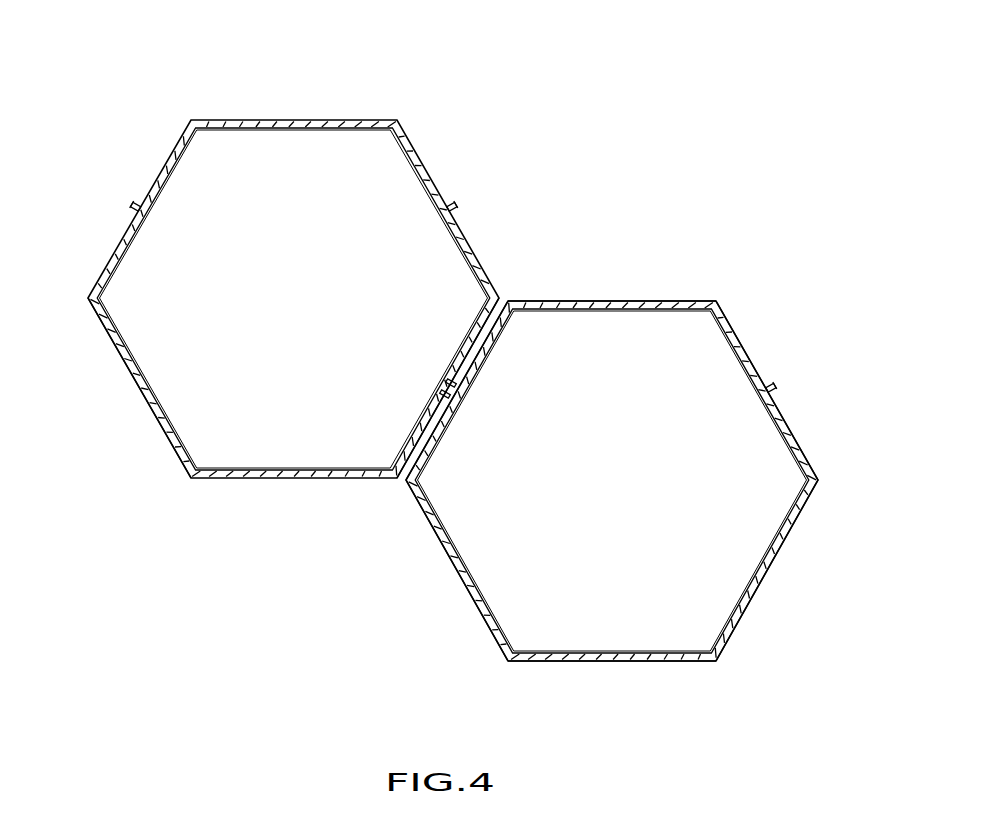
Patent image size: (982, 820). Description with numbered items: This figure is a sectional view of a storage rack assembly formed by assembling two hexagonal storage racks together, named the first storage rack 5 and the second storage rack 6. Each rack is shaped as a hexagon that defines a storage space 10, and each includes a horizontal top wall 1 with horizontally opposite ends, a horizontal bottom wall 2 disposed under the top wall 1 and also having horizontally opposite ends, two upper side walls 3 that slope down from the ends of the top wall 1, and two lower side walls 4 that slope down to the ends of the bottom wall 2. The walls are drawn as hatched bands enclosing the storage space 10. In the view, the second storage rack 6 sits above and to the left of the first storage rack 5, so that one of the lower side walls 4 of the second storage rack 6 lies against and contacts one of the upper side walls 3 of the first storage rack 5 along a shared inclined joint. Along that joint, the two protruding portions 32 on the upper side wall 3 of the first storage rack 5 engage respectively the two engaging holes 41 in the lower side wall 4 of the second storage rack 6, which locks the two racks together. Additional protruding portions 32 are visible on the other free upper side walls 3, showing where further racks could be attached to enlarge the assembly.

The horizontal top wall 1 is at (603, 300).
The horizontal bottom wall 2 is at (608, 663).
The upper side wall 3 is at (738, 330).
The lower side wall 4 is at (490, 323).
The first storage rack 5 is at (661, 278).
The second storage rack 6 is at (306, 90).
The storage space 10 is at (692, 596).
The protruding portion 32 is at (776, 384).
The engaging hole 41 is at (145, 398).